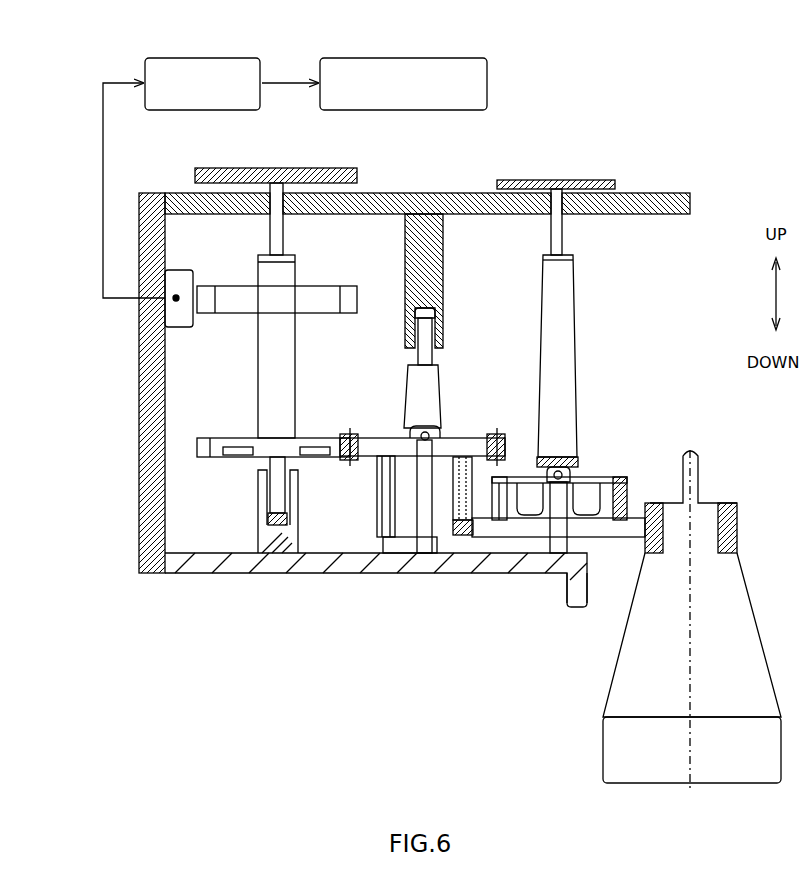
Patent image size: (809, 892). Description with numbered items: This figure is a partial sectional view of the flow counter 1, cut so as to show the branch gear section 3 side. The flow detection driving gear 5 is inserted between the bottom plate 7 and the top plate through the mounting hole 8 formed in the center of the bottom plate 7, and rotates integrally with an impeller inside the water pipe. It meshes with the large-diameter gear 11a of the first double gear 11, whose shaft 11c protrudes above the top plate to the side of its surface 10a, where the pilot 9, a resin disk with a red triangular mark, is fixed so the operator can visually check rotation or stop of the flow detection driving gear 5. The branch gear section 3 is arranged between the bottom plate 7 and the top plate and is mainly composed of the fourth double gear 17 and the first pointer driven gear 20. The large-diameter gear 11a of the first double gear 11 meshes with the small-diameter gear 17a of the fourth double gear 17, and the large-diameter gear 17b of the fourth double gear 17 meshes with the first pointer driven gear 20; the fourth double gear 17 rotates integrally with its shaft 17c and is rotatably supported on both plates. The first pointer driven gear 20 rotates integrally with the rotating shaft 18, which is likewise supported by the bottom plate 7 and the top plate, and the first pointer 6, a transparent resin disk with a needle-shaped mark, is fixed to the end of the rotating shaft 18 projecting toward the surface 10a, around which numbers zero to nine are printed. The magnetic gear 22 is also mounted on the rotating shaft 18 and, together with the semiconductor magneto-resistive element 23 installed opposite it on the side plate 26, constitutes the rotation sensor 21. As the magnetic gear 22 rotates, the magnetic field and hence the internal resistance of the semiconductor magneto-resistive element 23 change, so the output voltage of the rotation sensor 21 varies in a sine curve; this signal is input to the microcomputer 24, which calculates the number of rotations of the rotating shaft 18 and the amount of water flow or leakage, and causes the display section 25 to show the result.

The flow counter 1 is at (396, 349).
The branch gear section 3 is at (318, 563).
The flow detection driving gear 5 is at (727, 500).
The first pointer 6 is at (333, 168).
The bottom plate 7 is at (198, 575).
The mounting hole 8 is at (590, 578).
The pilot 9 is at (517, 180).
The surface of top plate 10a is at (650, 192).
The first double gear 11 is at (617, 475).
The large-diameter gear of first double gear 11a is at (483, 535).
The shaft of first double gear 11c is at (566, 236).
The fourth double gear 17 is at (490, 440).
The small-diameter gear of fourth double gear 17a is at (378, 575).
The large-diameter gear of fourth double gear 17b is at (362, 437).
The shaft of fourth double gear 17c is at (437, 362).
The rotating shaft 18 is at (258, 392).
The first pointer driven gear 20 is at (213, 457).
The rotation sensor 21 is at (133, 363).
The magnetic gear 22 is at (312, 287).
The semiconductor magneto-resistive element 23 is at (140, 313).
The microcomputer 24 is at (200, 58).
The display section 25 is at (393, 58).
The side plate 26 is at (138, 445).